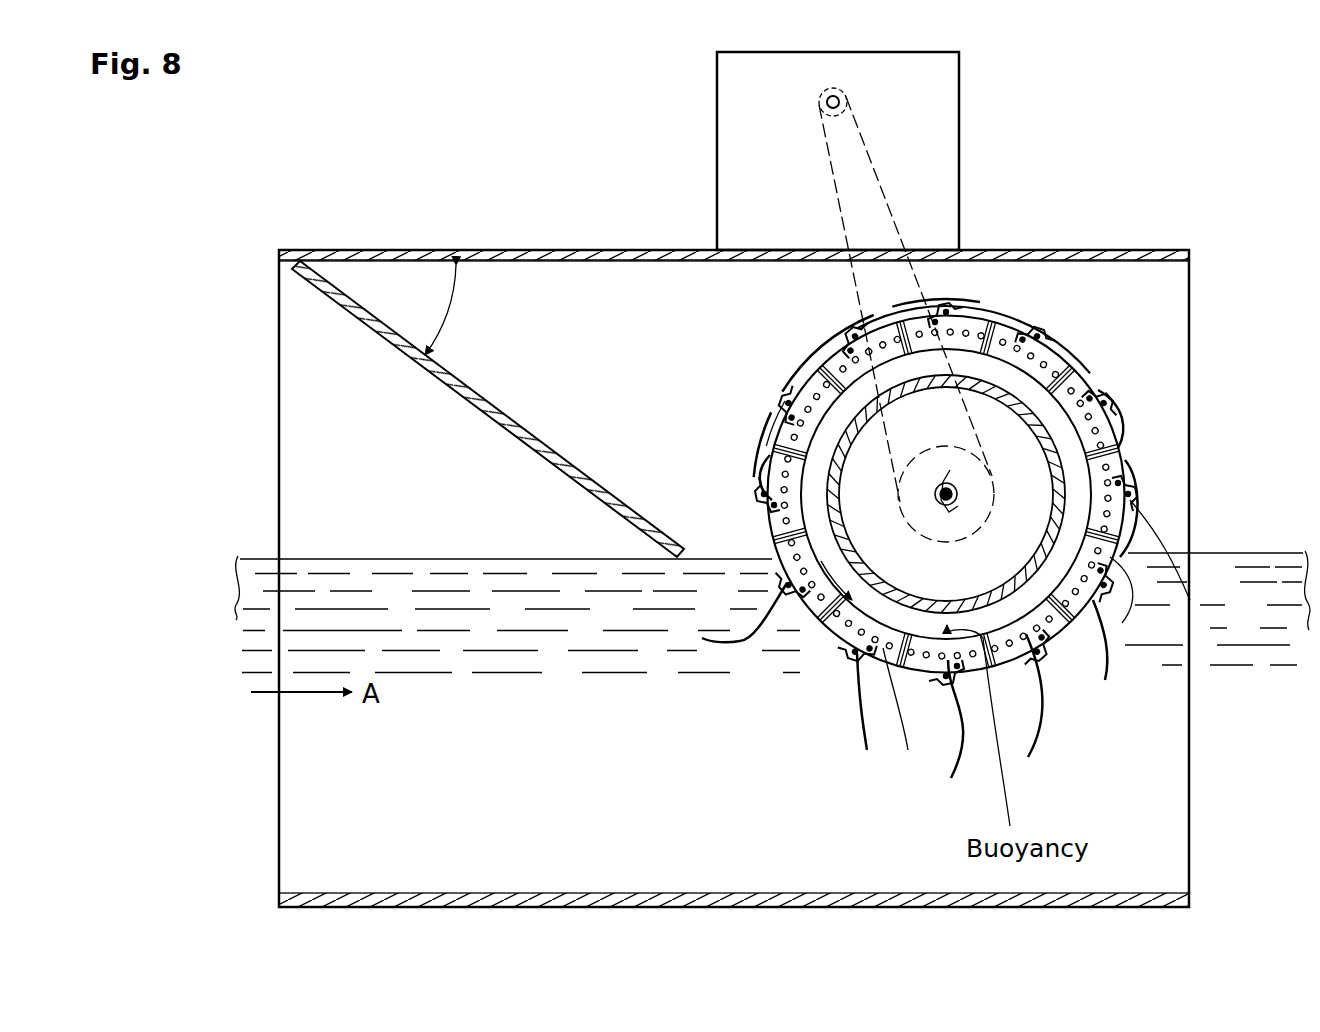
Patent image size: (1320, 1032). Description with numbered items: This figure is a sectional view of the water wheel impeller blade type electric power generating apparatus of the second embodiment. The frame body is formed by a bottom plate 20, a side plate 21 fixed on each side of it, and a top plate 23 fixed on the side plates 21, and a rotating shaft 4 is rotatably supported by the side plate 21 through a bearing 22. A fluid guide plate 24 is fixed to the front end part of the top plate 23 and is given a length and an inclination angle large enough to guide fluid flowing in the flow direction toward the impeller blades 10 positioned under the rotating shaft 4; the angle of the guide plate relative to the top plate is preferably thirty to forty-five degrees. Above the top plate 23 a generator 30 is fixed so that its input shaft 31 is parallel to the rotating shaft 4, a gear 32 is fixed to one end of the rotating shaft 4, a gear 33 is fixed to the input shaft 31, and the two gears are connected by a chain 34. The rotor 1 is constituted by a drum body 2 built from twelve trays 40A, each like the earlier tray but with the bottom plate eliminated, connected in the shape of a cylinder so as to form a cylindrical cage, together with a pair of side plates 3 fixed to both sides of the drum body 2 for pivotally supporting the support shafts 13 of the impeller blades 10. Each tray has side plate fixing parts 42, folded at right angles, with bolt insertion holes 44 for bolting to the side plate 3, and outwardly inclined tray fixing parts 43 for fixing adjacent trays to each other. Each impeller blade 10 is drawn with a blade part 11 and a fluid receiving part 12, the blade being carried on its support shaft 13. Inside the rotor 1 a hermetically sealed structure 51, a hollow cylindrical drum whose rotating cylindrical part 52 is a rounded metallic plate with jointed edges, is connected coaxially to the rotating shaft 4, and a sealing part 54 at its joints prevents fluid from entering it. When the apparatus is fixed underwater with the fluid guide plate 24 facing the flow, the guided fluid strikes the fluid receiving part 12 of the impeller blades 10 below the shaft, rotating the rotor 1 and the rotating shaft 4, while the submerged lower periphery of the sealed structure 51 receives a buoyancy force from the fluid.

The rotor 1 is at (1122, 453).
The drum body 2 is at (946, 494).
The side plate 3 is at (979, 475).
The rotating shaft 4 is at (951, 502).
The impeller blade 10 is at (960, 562).
The blade plate 11 is at (783, 386).
The fluid receiving part 12 is at (845, 326).
The support shaft 13 is at (780, 473).
The bottom plate 20 is at (566, 893).
The side plate 21 is at (642, 286).
The bearing 22 is at (972, 466).
The top plate 23 is at (582, 251).
The fluid guide plate 24 is at (513, 443).
The generator 30 is at (948, 141).
The input shaft 31 is at (827, 101).
The gear 32 is at (924, 512).
The gear 33 is at (820, 114).
The chain 34 is at (888, 214).
The tray 40A is at (1078, 353).
The side plate fixing part 42 is at (851, 404).
The tray fixing part 43 is at (910, 336).
The bolt insertion hole 44 is at (1012, 323).
The hermetically sealed structure 51 is at (1022, 408).
The rotating cylindrical part 52 is at (1058, 488).
The sealing part 54 is at (944, 506).